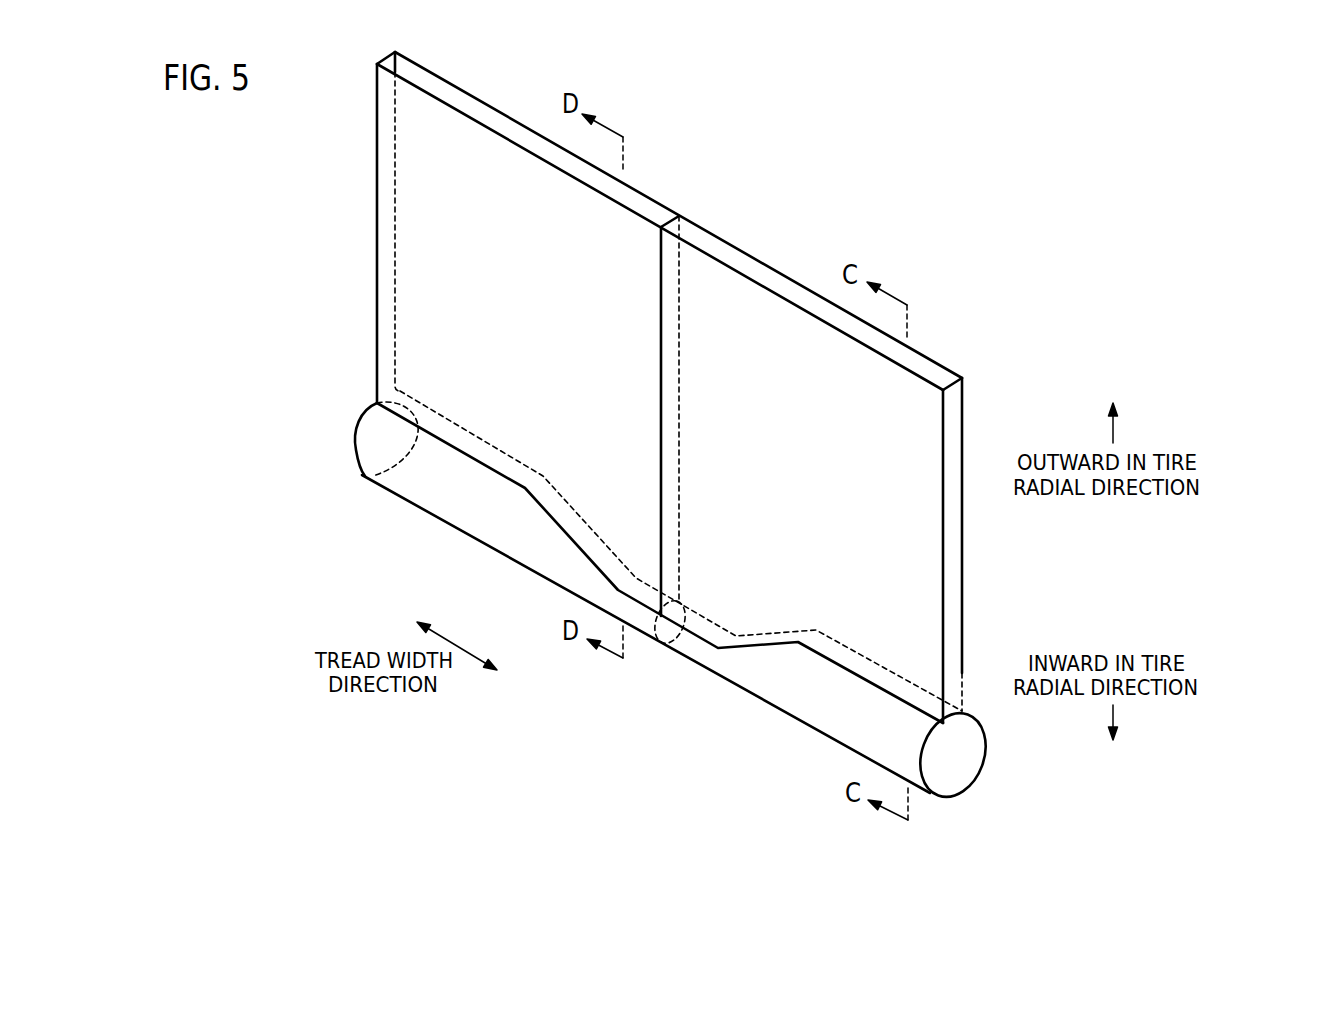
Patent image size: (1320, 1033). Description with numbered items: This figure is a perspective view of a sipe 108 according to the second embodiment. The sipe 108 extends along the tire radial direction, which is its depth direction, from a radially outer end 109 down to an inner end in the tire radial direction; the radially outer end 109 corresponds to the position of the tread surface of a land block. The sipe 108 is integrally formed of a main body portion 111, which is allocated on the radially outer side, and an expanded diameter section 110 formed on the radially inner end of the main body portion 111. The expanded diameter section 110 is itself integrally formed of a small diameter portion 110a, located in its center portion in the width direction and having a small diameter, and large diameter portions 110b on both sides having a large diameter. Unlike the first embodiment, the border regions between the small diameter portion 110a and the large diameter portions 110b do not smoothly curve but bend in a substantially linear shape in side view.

The sipe 108 is at (816, 152).
The radially outer end 109 is at (947, 378).
The expanded diameter section 110 is at (968, 744).
The small diameter portion 110a is at (656, 633).
The large diameter portion 110b is at (356, 443).
The main body portion 111 is at (961, 542).